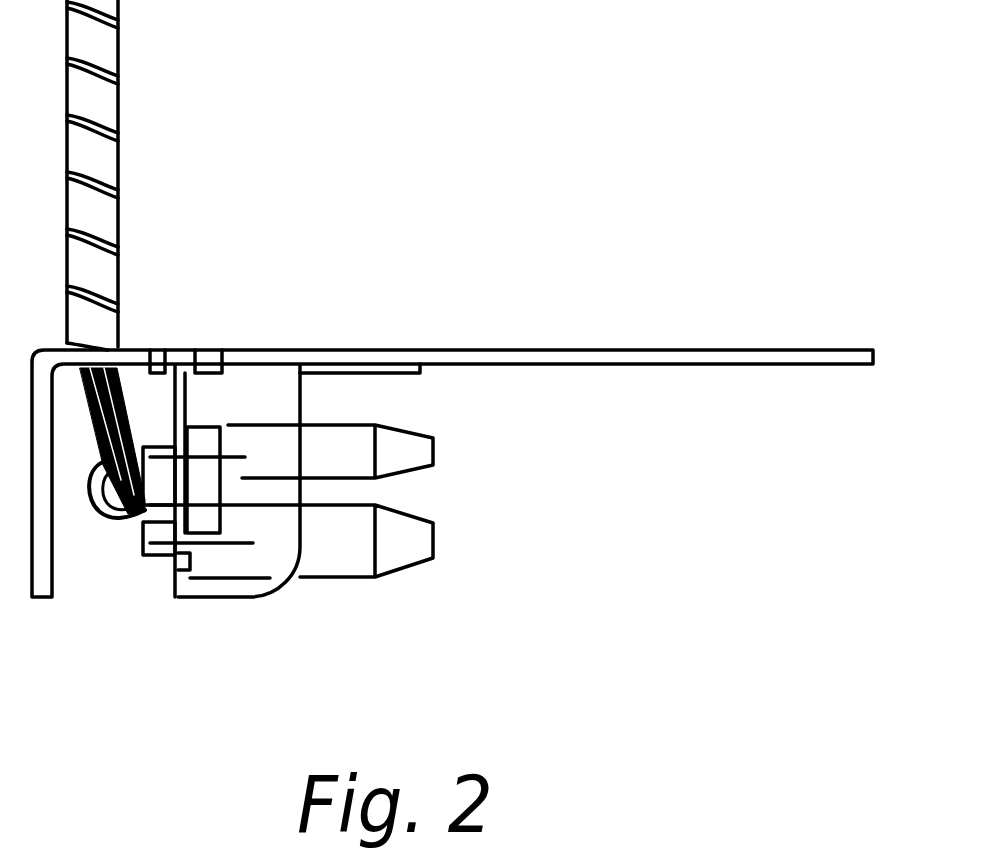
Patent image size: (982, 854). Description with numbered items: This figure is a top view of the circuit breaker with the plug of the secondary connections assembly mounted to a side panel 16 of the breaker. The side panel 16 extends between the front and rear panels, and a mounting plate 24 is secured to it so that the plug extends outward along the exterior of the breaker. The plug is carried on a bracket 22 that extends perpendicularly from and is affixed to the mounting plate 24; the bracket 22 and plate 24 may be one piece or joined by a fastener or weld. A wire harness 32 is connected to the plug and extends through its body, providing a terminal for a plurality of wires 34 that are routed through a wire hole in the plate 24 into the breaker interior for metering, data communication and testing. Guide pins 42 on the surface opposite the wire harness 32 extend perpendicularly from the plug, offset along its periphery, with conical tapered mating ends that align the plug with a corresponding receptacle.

The side panel 16 is at (700, 348).
The bracket 22 is at (275, 385).
The mounting plate 24 is at (168, 357).
The wire harness 32 is at (145, 528).
The wires 34 is at (110, 218).
The guide pins 42 is at (433, 452).